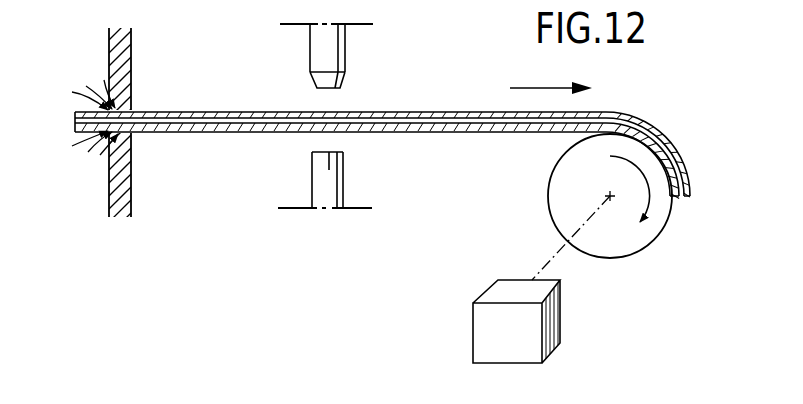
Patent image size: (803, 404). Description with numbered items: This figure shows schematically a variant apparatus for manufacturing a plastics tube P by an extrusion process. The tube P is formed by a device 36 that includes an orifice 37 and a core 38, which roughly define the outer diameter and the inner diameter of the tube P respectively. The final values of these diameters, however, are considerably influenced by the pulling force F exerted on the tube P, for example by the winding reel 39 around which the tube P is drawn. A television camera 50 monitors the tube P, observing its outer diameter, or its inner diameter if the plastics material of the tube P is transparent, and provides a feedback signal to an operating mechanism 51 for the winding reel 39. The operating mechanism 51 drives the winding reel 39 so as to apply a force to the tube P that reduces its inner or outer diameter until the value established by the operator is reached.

The device 36 is at (93, 204).
The orifice 37 is at (135, 136).
The core 38 is at (135, 108).
The winding reel 39 is at (561, 195).
The television camera 50 is at (338, 50).
The operating mechanism 51 is at (535, 326).
The plastics tube P is at (414, 111).
The pulling force F is at (551, 78).